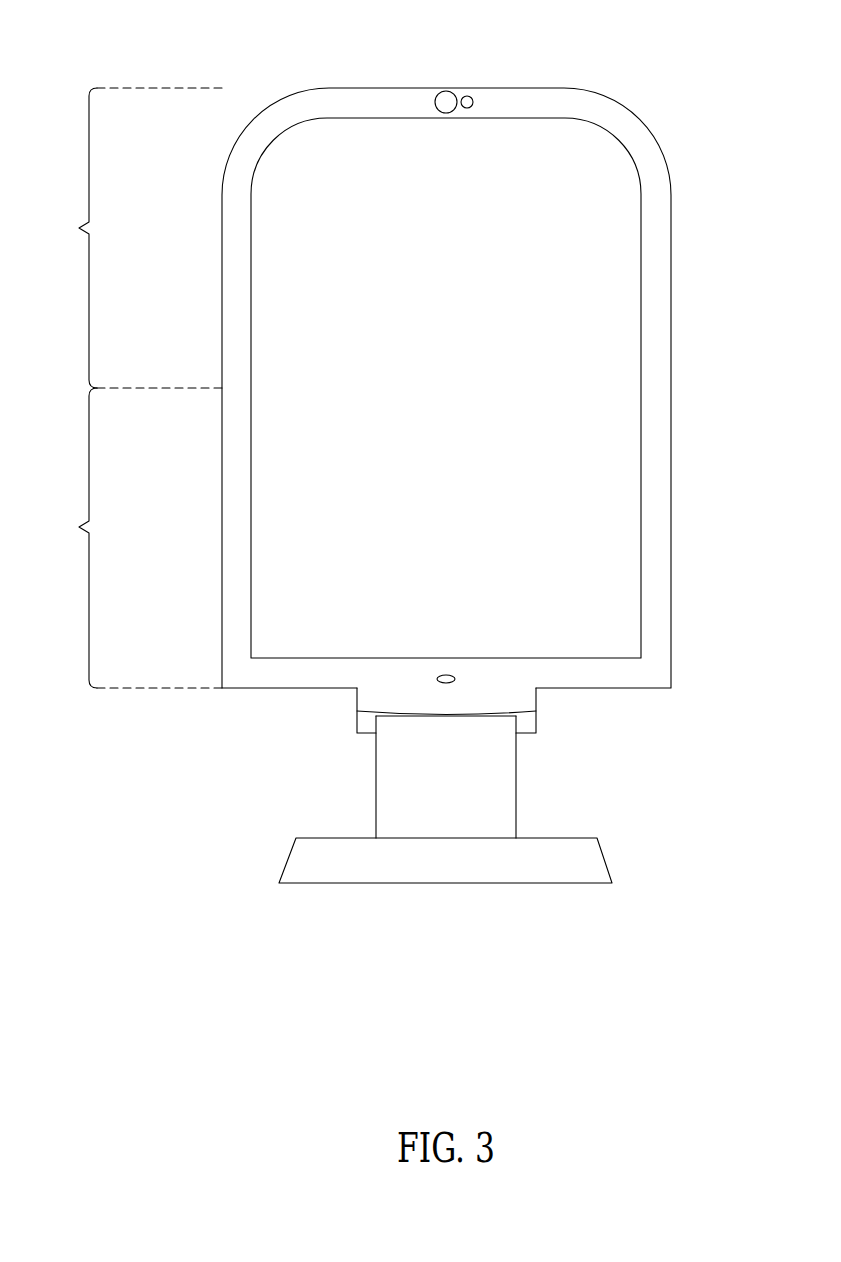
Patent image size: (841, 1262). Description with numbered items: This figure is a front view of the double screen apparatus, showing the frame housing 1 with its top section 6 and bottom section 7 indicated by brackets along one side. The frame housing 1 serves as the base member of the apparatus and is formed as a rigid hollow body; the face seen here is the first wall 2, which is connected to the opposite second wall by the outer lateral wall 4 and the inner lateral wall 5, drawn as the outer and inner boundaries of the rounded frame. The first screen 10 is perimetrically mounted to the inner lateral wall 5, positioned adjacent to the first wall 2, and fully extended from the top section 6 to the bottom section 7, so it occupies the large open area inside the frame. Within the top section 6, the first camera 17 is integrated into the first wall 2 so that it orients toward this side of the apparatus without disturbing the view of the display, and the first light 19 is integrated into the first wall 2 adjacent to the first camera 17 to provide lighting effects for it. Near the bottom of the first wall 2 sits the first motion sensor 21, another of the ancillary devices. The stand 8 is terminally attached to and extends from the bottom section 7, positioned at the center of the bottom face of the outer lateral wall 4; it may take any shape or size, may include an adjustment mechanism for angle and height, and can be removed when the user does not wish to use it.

The frame housing 1 is at (722, 363).
The first wall 2 is at (482, 388).
The outer lateral wall 4 is at (671, 237).
The inner lateral wall 5 is at (641, 222).
The top section 6 is at (140, 238).
The bottom section 7 is at (142, 538).
The stand 8 is at (600, 868).
The first screen 10 is at (631, 553).
The first camera 17 is at (446, 113).
The first light 19 is at (468, 96).
The first motion sensor 21 is at (446, 675).